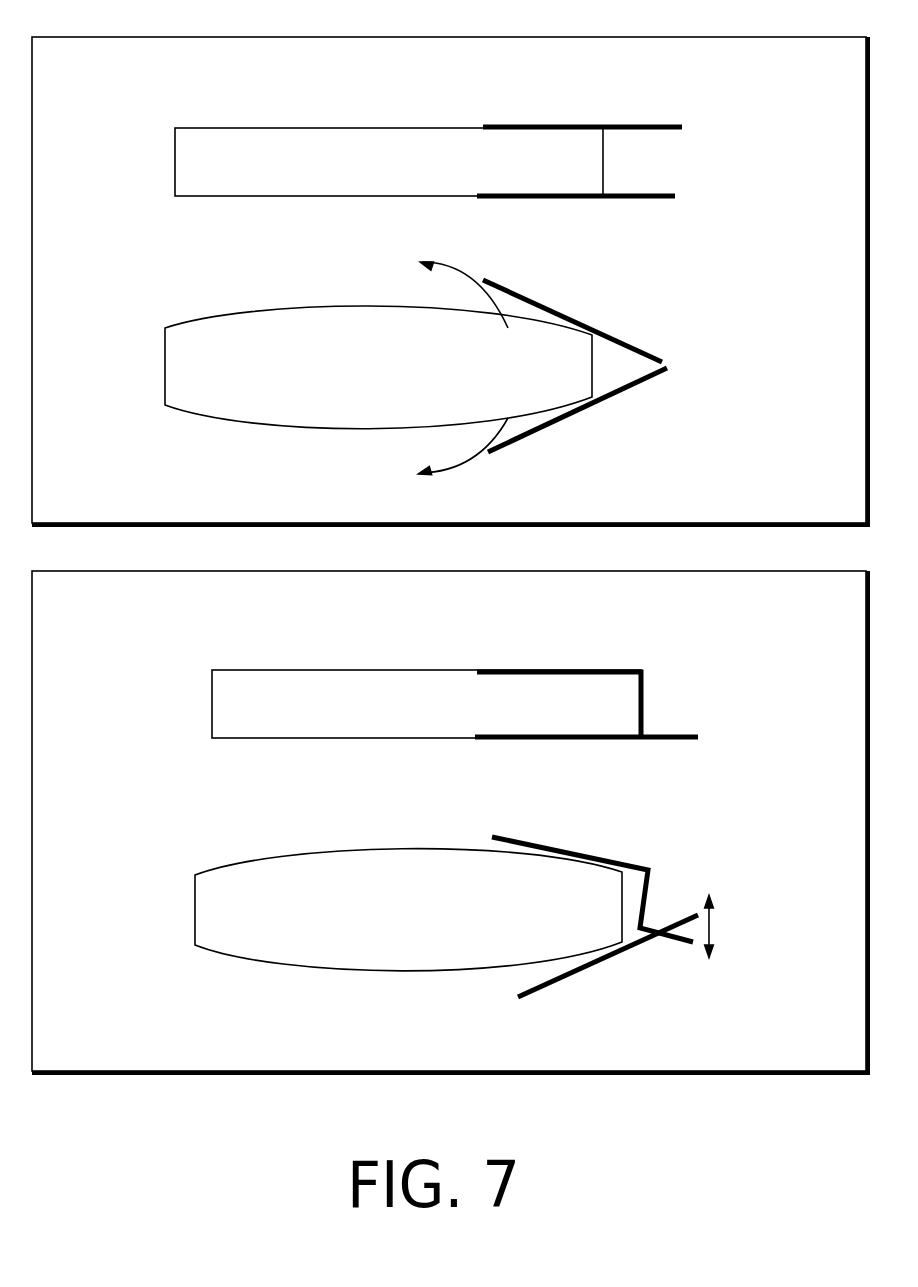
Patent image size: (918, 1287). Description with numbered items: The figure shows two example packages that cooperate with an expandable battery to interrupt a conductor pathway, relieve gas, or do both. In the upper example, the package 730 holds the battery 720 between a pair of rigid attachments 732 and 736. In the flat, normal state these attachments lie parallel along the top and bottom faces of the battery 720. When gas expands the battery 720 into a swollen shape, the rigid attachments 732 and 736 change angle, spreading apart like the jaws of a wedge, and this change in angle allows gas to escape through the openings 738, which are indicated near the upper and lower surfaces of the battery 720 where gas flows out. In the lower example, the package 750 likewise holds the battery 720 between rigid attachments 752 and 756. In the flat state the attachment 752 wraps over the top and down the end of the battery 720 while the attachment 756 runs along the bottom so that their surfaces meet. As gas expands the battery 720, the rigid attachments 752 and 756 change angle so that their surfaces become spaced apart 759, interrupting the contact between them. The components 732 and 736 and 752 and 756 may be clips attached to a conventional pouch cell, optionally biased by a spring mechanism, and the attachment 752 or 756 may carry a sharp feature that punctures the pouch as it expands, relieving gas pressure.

The battery 720 is at (460, 920).
The package 730 is at (207, 73).
The rigid attachment 732 is at (612, 219).
The rigid attachment 736 is at (606, 324).
The openings 738 is at (490, 311).
The package 750 is at (202, 610).
The rigid attachment 752 is at (611, 783).
The rigid attachment 756 is at (592, 867).
The spaced apart 759 is at (745, 926).